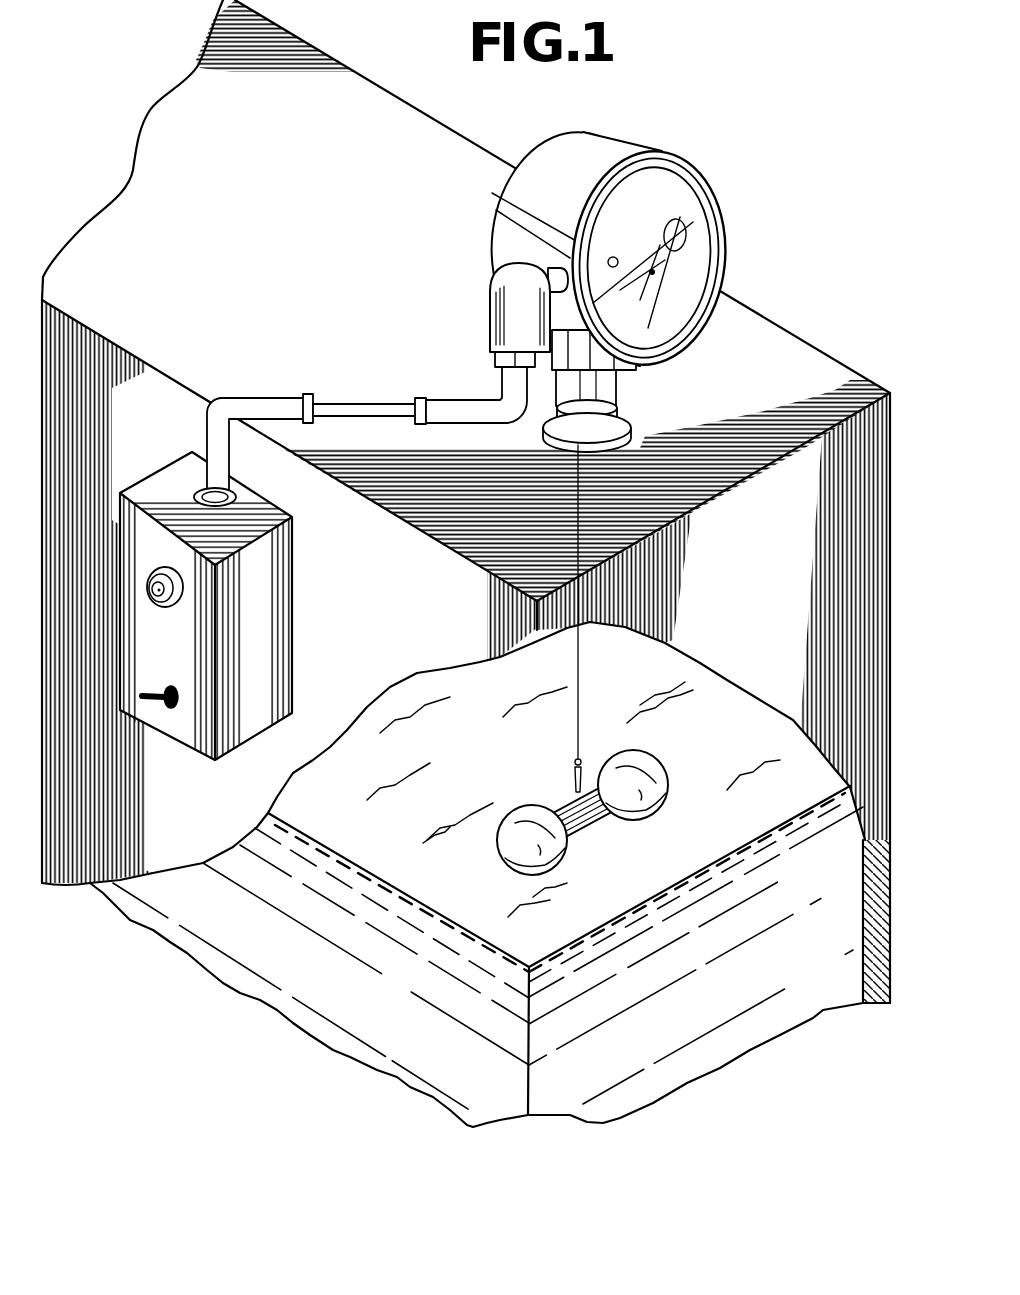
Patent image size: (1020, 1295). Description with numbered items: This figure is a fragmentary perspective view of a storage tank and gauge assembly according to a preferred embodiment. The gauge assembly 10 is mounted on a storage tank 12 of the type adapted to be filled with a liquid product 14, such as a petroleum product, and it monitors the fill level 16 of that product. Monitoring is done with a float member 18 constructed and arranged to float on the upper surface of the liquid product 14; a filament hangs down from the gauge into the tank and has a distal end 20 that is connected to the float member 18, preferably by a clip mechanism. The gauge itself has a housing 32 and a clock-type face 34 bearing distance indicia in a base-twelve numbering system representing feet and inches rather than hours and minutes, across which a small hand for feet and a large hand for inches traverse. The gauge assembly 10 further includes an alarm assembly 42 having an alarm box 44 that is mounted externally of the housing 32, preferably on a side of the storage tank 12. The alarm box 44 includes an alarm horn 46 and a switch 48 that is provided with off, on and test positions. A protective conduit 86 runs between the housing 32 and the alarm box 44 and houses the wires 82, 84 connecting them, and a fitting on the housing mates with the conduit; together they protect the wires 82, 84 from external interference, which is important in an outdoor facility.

The gauge assembly 10 is at (390, 316).
The storage tank 12 is at (807, 342).
The liquid product 14 is at (741, 995).
The fill level 16 is at (343, 855).
The float member 18 is at (523, 820).
The distal end 20 is at (585, 762).
The housing 32 is at (597, 261).
The clock face 34 is at (708, 341).
The alarm assembly 42 is at (207, 595).
The alarm box 44 is at (152, 478).
The alarm horn 46 is at (147, 588).
The switch 48 is at (167, 710).
The wire 82 is at (367, 404).
The wire 84 is at (350, 416).
The protective conduit 86 is at (284, 400).